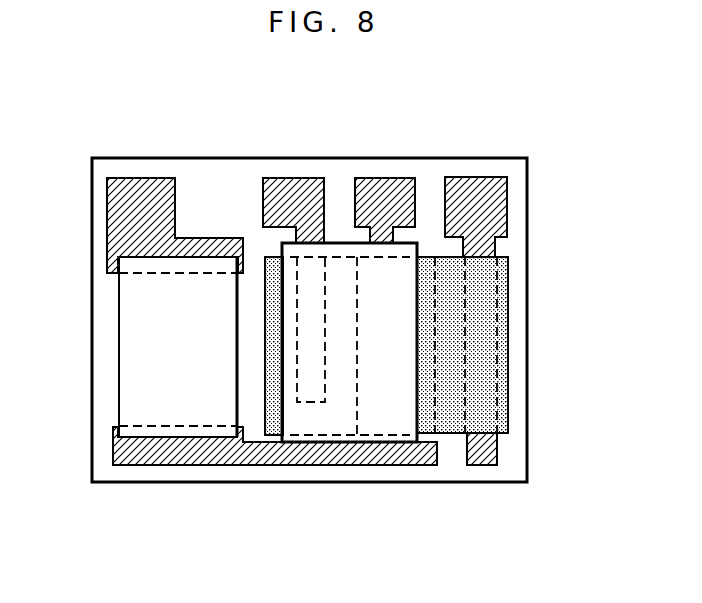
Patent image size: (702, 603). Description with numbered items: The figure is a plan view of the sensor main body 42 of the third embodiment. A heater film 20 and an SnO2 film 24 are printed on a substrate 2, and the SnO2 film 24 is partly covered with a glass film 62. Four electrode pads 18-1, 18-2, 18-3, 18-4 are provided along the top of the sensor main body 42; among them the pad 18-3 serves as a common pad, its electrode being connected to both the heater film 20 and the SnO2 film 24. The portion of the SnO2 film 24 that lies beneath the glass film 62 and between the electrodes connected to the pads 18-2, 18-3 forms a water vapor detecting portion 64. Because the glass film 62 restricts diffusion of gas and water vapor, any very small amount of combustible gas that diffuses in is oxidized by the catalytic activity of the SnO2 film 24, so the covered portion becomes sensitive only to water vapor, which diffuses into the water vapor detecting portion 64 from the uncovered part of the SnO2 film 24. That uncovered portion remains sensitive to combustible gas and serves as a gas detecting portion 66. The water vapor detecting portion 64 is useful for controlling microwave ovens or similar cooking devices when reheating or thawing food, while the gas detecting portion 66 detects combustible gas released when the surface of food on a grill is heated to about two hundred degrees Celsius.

The electrode pad 18-1 is at (148, 195).
The electrode pad 18-2 is at (292, 190).
The common electrode pad 18-3 is at (393, 190).
The electrode pad 18-4 is at (500, 195).
The heater film 20 is at (145, 335).
The substrate 2 is at (405, 462).
The SnO2 film 24 is at (503, 368).
The glass film 62 is at (403, 324).
The water vapor detecting portion 64 is at (343, 393).
The gas detecting portion 66 is at (453, 433).
The sensor main body 42 is at (253, 547).